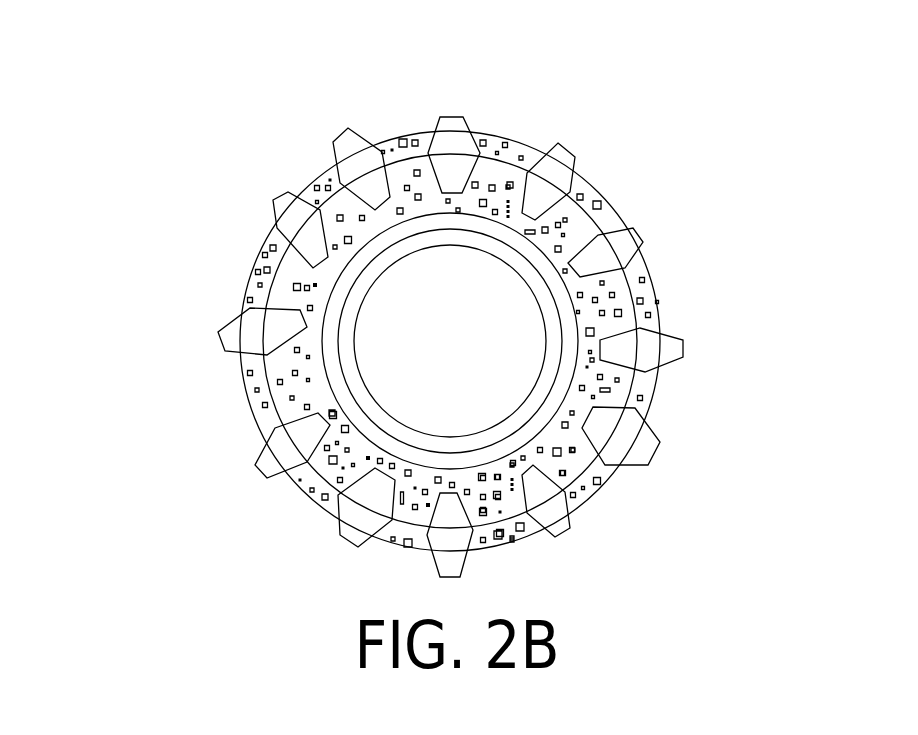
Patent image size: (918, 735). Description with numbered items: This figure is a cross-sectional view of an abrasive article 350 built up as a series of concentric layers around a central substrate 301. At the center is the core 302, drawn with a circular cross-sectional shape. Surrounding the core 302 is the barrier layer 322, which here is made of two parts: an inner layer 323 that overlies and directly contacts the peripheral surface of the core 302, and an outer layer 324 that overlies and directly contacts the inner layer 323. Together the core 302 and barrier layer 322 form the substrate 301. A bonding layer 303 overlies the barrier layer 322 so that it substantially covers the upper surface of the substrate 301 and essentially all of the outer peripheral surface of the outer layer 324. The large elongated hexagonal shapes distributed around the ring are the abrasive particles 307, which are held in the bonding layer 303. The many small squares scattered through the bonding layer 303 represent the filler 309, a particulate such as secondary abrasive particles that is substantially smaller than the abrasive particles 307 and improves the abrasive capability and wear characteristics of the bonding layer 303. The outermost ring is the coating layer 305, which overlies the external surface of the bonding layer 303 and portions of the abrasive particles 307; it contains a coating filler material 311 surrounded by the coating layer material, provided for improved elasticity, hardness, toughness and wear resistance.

The abrasive article 350 is at (349, 281).
The substrate 301 is at (487, 218).
The core 302 is at (471, 351).
The bonding layer 303 is at (696, 426).
The coating layer 305 is at (515, 341).
The abrasive particles 307 is at (625, 237).
The filler 309 is at (417, 168).
The coating filler material 311 is at (245, 375).
The barrier layer 322 is at (575, 313).
The inner layer 323 is at (547, 403).
The outer layer 324 is at (532, 374).